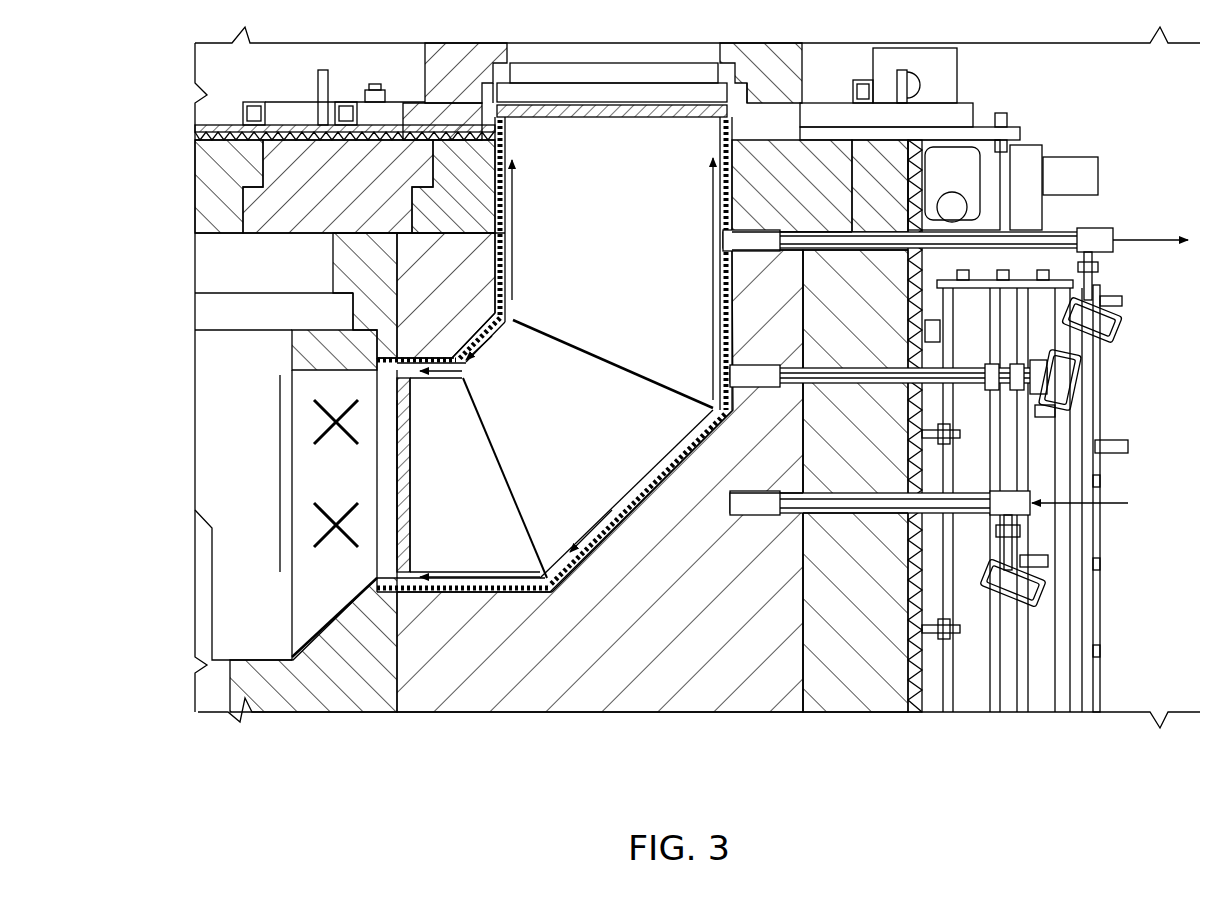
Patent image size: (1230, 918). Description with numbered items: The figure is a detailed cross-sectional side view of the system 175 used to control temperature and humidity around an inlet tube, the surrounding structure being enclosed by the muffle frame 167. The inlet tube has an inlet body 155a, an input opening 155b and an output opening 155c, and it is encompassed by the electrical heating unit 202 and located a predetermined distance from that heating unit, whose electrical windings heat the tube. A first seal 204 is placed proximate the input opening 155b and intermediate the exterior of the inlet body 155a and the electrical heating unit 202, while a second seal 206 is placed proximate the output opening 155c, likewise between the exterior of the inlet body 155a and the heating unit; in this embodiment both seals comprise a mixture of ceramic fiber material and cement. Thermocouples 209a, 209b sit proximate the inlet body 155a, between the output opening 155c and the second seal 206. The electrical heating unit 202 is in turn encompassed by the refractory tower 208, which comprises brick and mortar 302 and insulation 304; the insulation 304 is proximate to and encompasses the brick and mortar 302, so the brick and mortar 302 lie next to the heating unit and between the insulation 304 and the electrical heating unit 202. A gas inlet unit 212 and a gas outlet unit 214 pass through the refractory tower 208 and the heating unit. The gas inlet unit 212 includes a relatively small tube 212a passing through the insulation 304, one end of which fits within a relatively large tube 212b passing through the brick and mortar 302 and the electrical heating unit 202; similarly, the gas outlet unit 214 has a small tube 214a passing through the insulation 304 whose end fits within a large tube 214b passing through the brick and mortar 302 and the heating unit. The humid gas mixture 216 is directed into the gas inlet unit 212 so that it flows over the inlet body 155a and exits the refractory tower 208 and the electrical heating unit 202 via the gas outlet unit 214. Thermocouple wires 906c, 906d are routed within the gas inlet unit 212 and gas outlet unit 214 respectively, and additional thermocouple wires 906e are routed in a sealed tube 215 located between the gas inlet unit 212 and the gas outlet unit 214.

The inlet body 155a is at (502, 348).
The input opening 155b is at (613, 51).
The output opening 155c is at (243, 515).
The muffle frame 167 is at (621, 408).
The system 175 is at (822, 796).
The electrical heating unit 202 is at (509, 122).
The first seal 204 is at (606, 118).
The second seal 206 is at (411, 478).
The refractory tower 208 is at (571, 797).
The thermocouple 209a is at (350, 432).
The thermocouple 209b is at (357, 527).
The gas inlet unit 212 is at (958, 495).
The small tube 212a is at (867, 518).
The large tube 212b is at (718, 517).
The gas outlet unit 214 is at (1022, 228).
The small tube 214a is at (874, 250).
The large tube 214b is at (778, 229).
The sealed tube 215 is at (965, 361).
The humid gas mixture 216 is at (515, 222).
The brick and mortar 302 is at (523, 454).
The insulation 304 is at (554, 454).
The thermocouple wire 906c is at (1020, 535).
The thermocouple wire 906d is at (1102, 285).
The thermocouple wires 906e is at (980, 390).